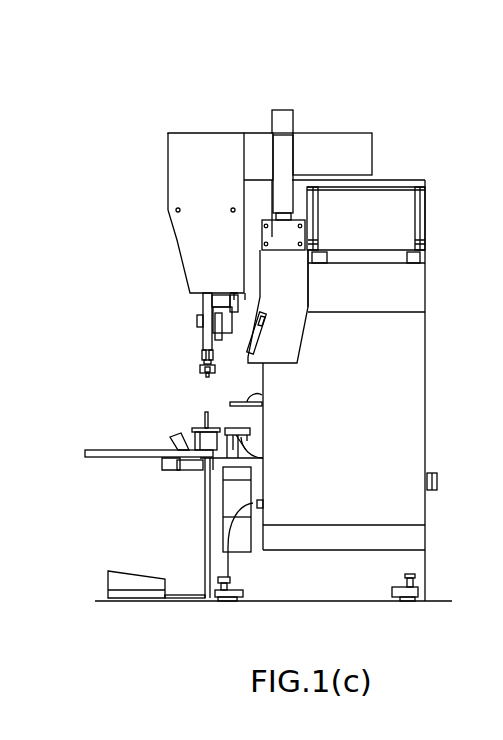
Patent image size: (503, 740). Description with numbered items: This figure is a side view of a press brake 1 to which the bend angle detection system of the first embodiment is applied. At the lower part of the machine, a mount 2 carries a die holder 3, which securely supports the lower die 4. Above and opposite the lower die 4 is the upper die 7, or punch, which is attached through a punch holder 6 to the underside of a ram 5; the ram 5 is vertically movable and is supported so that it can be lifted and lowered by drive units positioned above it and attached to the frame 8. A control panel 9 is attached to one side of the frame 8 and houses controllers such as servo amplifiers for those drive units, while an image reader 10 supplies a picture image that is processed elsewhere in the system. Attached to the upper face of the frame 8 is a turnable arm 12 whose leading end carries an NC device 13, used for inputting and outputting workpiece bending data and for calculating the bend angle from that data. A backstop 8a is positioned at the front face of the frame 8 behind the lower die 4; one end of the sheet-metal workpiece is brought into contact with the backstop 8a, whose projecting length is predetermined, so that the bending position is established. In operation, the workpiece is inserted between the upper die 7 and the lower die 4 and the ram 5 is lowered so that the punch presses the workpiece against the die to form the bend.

The press brake 1 is at (247, 125).
The mount 2 is at (190, 432).
The die holder 3 is at (217, 413).
The lower die 4 is at (200, 413).
The ram 5 is at (198, 308).
The punch holder 6 is at (200, 355).
The upper die 7 is at (208, 375).
The frame 8 is at (205, 255).
The backstop 8a is at (262, 395).
The control panel 9 is at (400, 425).
The image reader 10 is at (163, 462).
The turnable arm 12 is at (286, 160).
The NC device 13 is at (284, 340).